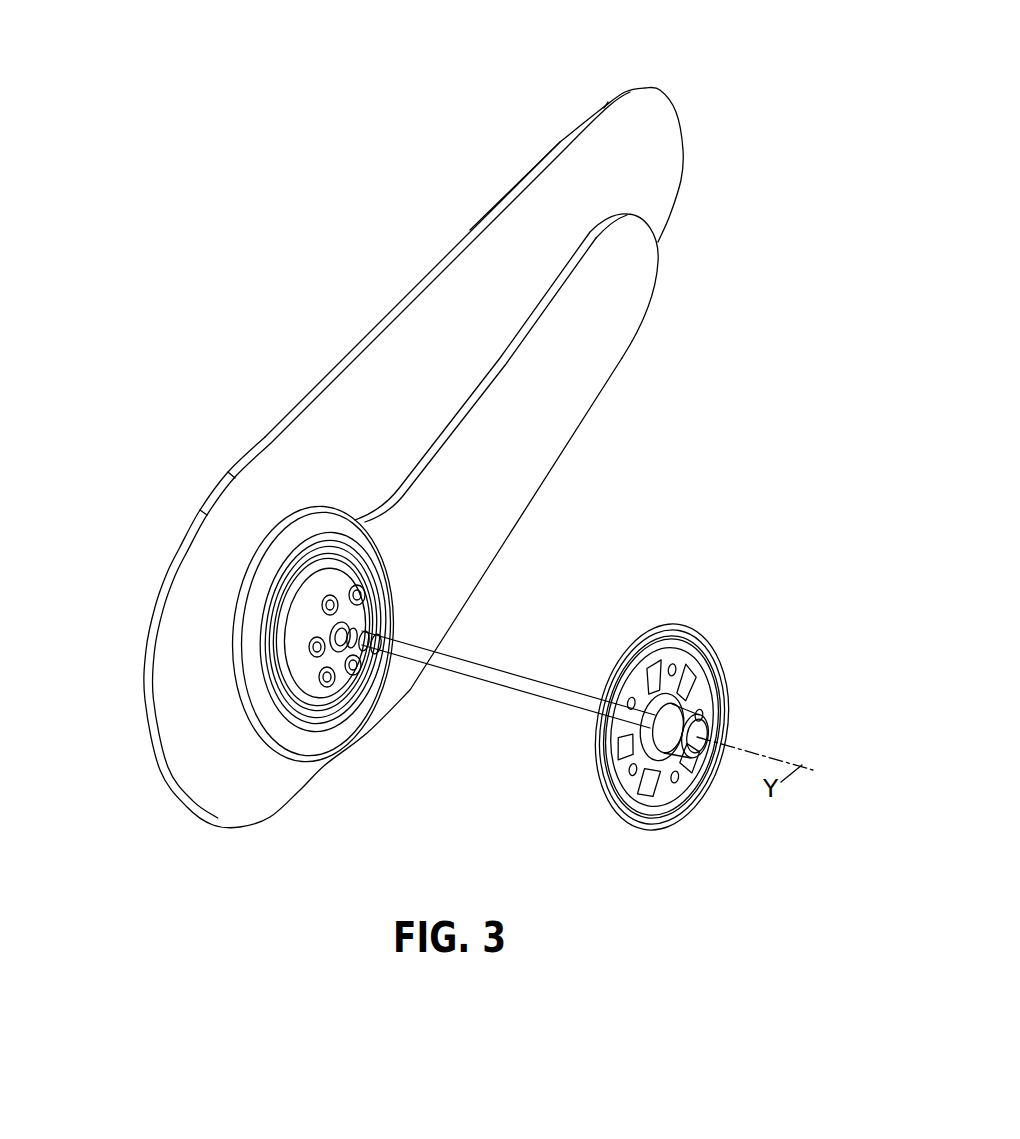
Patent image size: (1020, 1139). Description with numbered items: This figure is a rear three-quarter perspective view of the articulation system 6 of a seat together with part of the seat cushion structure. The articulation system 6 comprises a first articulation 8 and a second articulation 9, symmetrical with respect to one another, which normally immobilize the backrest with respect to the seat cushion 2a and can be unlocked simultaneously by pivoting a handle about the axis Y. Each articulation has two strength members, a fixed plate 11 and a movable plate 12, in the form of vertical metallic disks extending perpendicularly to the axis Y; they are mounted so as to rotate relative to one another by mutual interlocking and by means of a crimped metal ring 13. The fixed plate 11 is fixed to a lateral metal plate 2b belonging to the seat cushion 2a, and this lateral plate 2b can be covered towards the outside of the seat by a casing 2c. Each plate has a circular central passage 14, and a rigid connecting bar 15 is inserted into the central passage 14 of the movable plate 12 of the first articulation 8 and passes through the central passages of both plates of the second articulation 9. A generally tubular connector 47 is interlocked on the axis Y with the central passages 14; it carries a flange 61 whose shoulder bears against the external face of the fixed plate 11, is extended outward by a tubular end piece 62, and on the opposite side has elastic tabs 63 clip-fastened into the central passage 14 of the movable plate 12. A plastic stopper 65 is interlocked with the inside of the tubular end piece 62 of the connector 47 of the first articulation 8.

The seat cushion 2a is at (661, 82).
The lateral metal plate 2b is at (645, 285).
The casing 2c is at (587, 157).
The articulation system 6 is at (748, 561).
The first articulation 8 is at (631, 840).
The second articulation 9 is at (299, 742).
The fixed plate 11 is at (685, 782).
The movable plate 12 is at (340, 685).
The crimped metal ring 13 is at (361, 543).
The circular central passage 14 is at (348, 622).
The rigid connecting bar 15 is at (507, 674).
The connector 47 is at (315, 633).
The flange 61 is at (690, 688).
The tubular end piece 62 is at (686, 713).
The elastic tabs 63 is at (343, 623).
The plastic stopper 65 is at (705, 722).